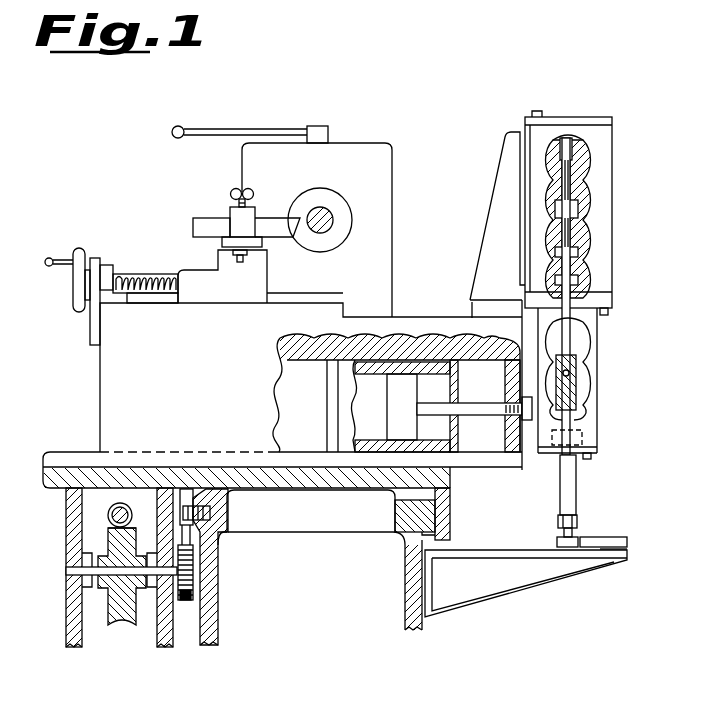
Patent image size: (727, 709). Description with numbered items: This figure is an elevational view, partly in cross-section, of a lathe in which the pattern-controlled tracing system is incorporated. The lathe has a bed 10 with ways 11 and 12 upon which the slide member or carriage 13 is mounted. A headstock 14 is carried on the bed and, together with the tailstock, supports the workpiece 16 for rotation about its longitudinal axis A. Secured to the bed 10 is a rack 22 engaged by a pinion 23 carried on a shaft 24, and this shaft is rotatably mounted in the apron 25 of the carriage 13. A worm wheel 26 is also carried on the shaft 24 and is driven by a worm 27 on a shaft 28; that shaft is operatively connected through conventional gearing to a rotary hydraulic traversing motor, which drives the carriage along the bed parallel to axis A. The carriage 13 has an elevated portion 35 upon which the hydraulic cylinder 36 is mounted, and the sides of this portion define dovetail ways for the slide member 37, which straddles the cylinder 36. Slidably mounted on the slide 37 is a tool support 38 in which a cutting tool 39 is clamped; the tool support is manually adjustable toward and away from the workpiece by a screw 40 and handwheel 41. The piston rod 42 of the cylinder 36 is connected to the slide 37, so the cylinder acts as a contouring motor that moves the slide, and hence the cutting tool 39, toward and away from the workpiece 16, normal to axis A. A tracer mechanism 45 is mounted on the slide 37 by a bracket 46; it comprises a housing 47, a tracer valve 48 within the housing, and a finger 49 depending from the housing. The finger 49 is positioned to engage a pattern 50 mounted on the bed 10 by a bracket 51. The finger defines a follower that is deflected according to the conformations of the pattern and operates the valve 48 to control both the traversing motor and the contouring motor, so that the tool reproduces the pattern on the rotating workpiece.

The bed 10 is at (219, 618).
The way 11 is at (232, 510).
The way 12 is at (393, 507).
The carriage 13 is at (452, 512).
The headstock 14 is at (393, 149).
The workpiece 16 is at (330, 206).
The rack 22 is at (196, 535).
The pinion 23 is at (193, 577).
The shaft 24 is at (147, 582).
The apron 25 is at (66, 617).
The worm wheel 26 is at (113, 626).
The worm 27 is at (108, 512).
The shaft 28 is at (110, 520).
The elevated portion 35 is at (293, 451).
The hydraulic cylinder 36 is at (326, 396).
The slide member 37 is at (99, 400).
The tool support 38 is at (183, 266).
The cutting tool 39 is at (193, 218).
The screw 40 is at (127, 271).
The handwheel 41 is at (78, 252).
The piston rod 42 is at (460, 416).
The tracer mechanism 45 is at (612, 153).
The bracket 46 is at (488, 223).
The housing 47 is at (613, 251).
The tracer valve 48 is at (572, 214).
The finger 49 is at (578, 504).
The pattern 50 is at (623, 538).
The bracket 51 is at (528, 590).